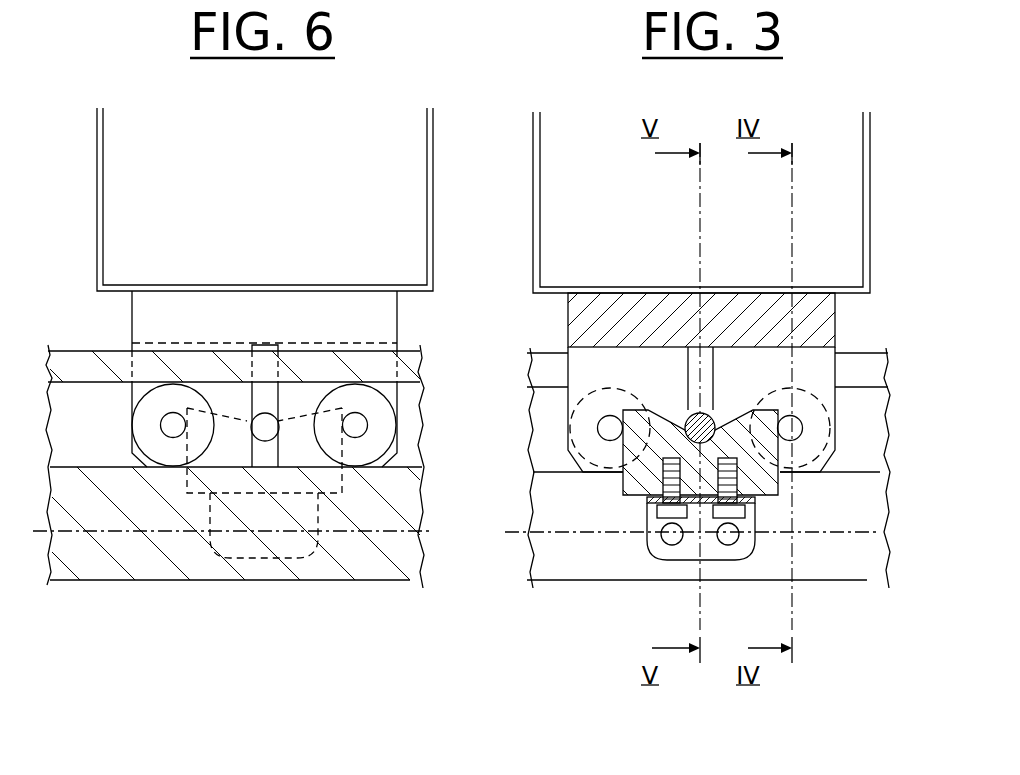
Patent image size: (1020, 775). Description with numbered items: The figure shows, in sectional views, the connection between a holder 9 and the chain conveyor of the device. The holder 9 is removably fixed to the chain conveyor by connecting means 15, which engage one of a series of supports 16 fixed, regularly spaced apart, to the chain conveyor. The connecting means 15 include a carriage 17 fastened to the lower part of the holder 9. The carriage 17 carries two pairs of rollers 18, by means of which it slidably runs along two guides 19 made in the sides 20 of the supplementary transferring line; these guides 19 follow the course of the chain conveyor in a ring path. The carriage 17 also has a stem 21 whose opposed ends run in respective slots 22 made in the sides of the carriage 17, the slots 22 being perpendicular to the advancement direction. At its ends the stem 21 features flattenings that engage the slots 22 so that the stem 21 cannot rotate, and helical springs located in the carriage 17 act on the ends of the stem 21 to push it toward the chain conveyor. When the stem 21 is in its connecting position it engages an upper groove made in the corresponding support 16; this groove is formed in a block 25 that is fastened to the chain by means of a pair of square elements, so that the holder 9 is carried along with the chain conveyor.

In FIG. 6, the holder 9 is at (98, 137).
In FIG. 3, the holder 9 is at (868, 172).
In FIG. 6, the connecting means 15 is at (112, 327).
In FIG. 3, the support 16 is at (636, 553).
In FIG. 6, the carriage 17 is at (383, 315).
In FIG. 3, the carriage 17 is at (748, 313).
In FIG. 6, the roller 18 is at (162, 450).
In FIG. 6, the guide 19 is at (96, 466).
In FIG. 3, the guide 19 is at (550, 470).
In FIG. 6, the side 20 is at (203, 565).
In FIG. 3, the stem 21 is at (712, 414).
In FIG. 6, the slot 22 is at (262, 453).
In FIG. 3, the slot 22 is at (693, 362).
In FIG. 3, the block 25 is at (625, 488).